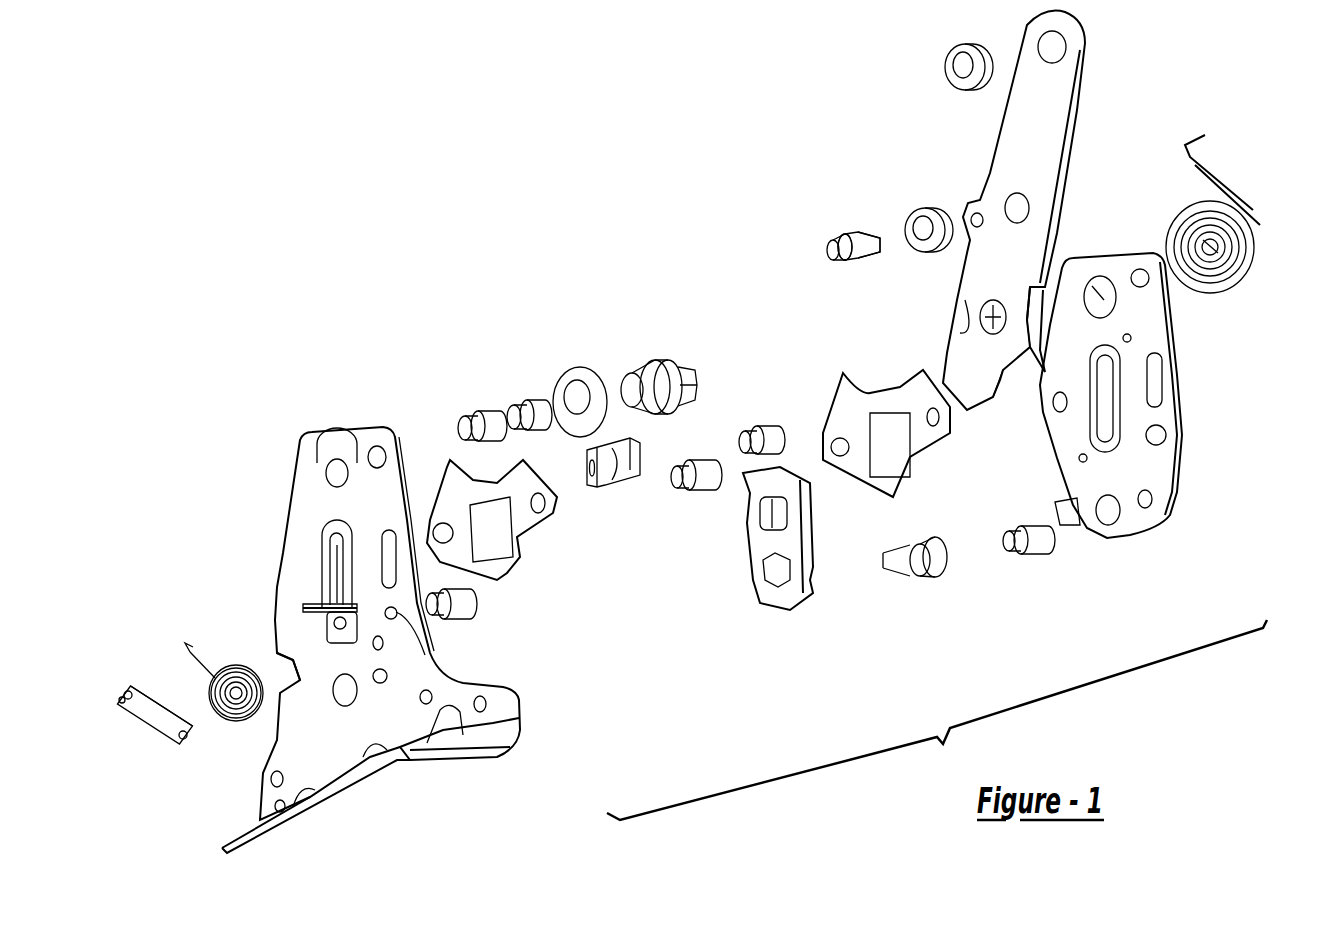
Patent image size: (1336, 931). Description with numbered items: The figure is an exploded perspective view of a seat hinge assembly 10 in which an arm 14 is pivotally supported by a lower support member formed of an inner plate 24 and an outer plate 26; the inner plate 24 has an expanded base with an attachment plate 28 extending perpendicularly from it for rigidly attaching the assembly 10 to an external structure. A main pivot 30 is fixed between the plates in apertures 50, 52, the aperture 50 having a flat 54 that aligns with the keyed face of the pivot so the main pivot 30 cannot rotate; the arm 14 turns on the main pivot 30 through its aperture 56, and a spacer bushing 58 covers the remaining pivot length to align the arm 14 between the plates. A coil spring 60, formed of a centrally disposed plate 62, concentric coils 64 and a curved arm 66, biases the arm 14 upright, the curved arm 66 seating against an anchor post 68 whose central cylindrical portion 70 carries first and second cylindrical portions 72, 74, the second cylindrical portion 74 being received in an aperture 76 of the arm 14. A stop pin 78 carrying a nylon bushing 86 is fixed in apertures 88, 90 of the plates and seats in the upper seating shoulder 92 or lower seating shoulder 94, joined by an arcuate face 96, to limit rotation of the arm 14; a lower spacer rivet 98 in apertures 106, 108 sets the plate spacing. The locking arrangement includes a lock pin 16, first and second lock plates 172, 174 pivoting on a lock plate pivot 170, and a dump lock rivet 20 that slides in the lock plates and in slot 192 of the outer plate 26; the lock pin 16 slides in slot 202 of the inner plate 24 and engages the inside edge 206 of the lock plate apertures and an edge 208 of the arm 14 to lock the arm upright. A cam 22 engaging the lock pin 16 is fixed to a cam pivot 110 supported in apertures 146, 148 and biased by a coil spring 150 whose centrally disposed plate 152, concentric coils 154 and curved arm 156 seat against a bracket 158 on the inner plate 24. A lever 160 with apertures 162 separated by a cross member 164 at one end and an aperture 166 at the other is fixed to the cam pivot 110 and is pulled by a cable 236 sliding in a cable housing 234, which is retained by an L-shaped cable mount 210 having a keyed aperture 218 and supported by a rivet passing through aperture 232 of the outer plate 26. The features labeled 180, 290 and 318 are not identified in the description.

The seat hinge assembly 10 is at (937, 720).
The arm 14 is at (1080, 100).
The lock pin 16 is at (615, 485).
The dump lock rivet 20 is at (760, 422).
The cam 22 is at (745, 558).
The inner plate 24 is at (297, 453).
The outer plate 26 is at (1178, 340).
The attachment plate 28 is at (395, 770).
The main pivot 30 is at (662, 358).
The aperture 50 is at (322, 435).
The aperture 52 is at (1097, 280).
The flat 54 is at (345, 440).
The aperture 56 is at (982, 317).
The spacer bushing 58 is at (568, 415).
The coil spring 60 is at (1245, 203).
The centrally disposed plate 62 is at (1215, 247).
The concentric coils 64 is at (1250, 290).
The curved arm 66 is at (1235, 173).
The anchor post 68 is at (848, 232).
The centrally disposed cylindrical portion 70 is at (858, 258).
The first cylindrical portion 72 is at (870, 240).
The second cylindrical portion 74 is at (840, 258).
The aperture 76 is at (972, 215).
The stop pin 78 is at (480, 410).
The nylon bushing 86 is at (527, 400).
The aperture 88 is at (385, 450).
The aperture 90 is at (1142, 270).
The upper seating shoulder 92 is at (1043, 293).
The lower seating shoulder 94 is at (1003, 383).
The arcuate face 96 is at (1032, 362).
The lower spacer rivet 98 is at (1030, 553).
The aperture 106 is at (381, 683).
The aperture 108 is at (1150, 495).
The cam pivot 110 is at (938, 545).
The aperture 146 is at (345, 706).
The aperture 148 is at (1112, 525).
The coil spring 150 is at (240, 667).
The centrally disposed plate 152 is at (250, 722).
The concentric coils 154 is at (222, 680).
The curved arm 156 is at (185, 660).
The bracket 158 is at (288, 652).
The lever 160 is at (172, 748).
The apertures 162 is at (125, 692).
The cross member 164 is at (122, 703).
The aperture 166 is at (190, 745).
The lock plate pivot 170 is at (700, 490).
The first lock plate 172 is at (518, 567).
The second lock plate 174 is at (905, 387).
The slot 180 is at (386, 540).
The slot 192 is at (1158, 375).
The slot 202 is at (330, 535).
The inside edge 206 is at (303, 604).
The edge 208 is at (333, 580).
The cable mount 210 is at (400, 620).
The keyed aperture 218 is at (358, 612).
The aperture 232 is at (1162, 430).
The cable housing 234 is at (340, 643).
The cable 236 is at (397, 614).
The bend 290 is at (960, 333).
The pin 318 is at (452, 594).